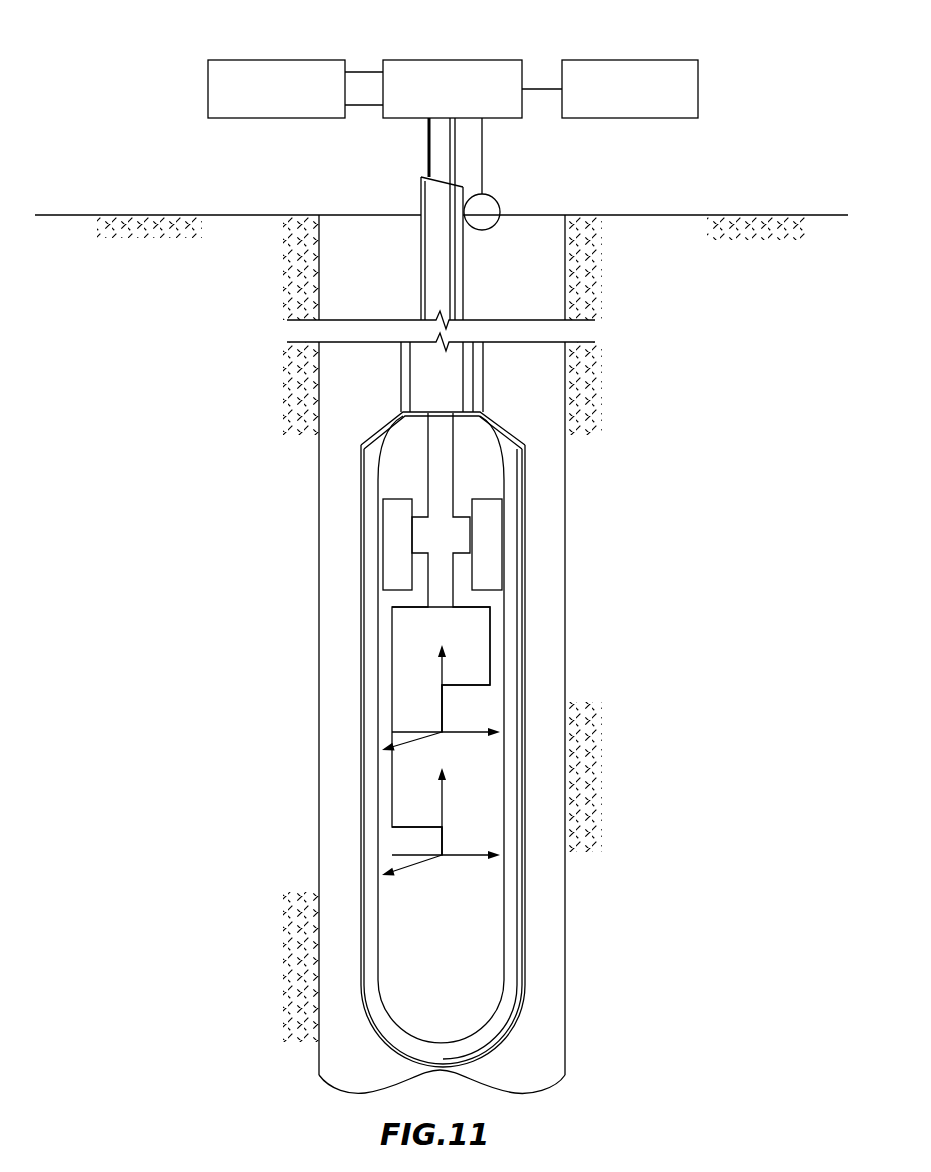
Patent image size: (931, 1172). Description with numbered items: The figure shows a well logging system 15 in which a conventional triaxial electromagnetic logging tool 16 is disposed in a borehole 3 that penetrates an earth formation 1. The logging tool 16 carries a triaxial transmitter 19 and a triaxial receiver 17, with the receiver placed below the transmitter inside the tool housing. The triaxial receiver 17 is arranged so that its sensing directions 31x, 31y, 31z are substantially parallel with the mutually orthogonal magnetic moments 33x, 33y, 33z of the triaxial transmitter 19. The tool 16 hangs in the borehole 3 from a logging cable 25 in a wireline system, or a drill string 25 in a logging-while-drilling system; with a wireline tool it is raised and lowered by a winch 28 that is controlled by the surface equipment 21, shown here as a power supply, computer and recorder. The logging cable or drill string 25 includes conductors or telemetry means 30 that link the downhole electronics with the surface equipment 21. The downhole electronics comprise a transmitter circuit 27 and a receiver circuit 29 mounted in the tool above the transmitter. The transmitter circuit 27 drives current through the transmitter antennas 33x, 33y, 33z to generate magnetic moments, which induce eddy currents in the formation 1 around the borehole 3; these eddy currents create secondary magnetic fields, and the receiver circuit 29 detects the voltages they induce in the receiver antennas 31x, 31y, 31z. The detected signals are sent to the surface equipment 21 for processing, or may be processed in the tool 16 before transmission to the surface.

The formation 1 is at (186, 325).
The borehole 3 is at (361, 263).
The well logging system 15 is at (520, 257).
The logging tool 16 is at (372, 432).
The triaxial receiver 17 is at (450, 870).
The triaxial transmitter 19 is at (425, 710).
The surface equipment 21 is at (207, 85).
The logging cable 25 is at (435, 202).
The transmitter circuit 27 is at (393, 541).
The winch 28 is at (488, 193).
The receiver circuit 29 is at (488, 544).
The conductors or telemetry means 30 is at (435, 150).
The receiver antenna x-axis 31x is at (477, 855).
The receiver antenna y-axis 31y is at (413, 863).
The receiver antenna z-axis 31z is at (443, 812).
The transmitter antenna x-axis 33x is at (470, 728).
The transmitter antenna y-axis 33y is at (413, 737).
The transmitter antenna z-axis 33z is at (443, 672).